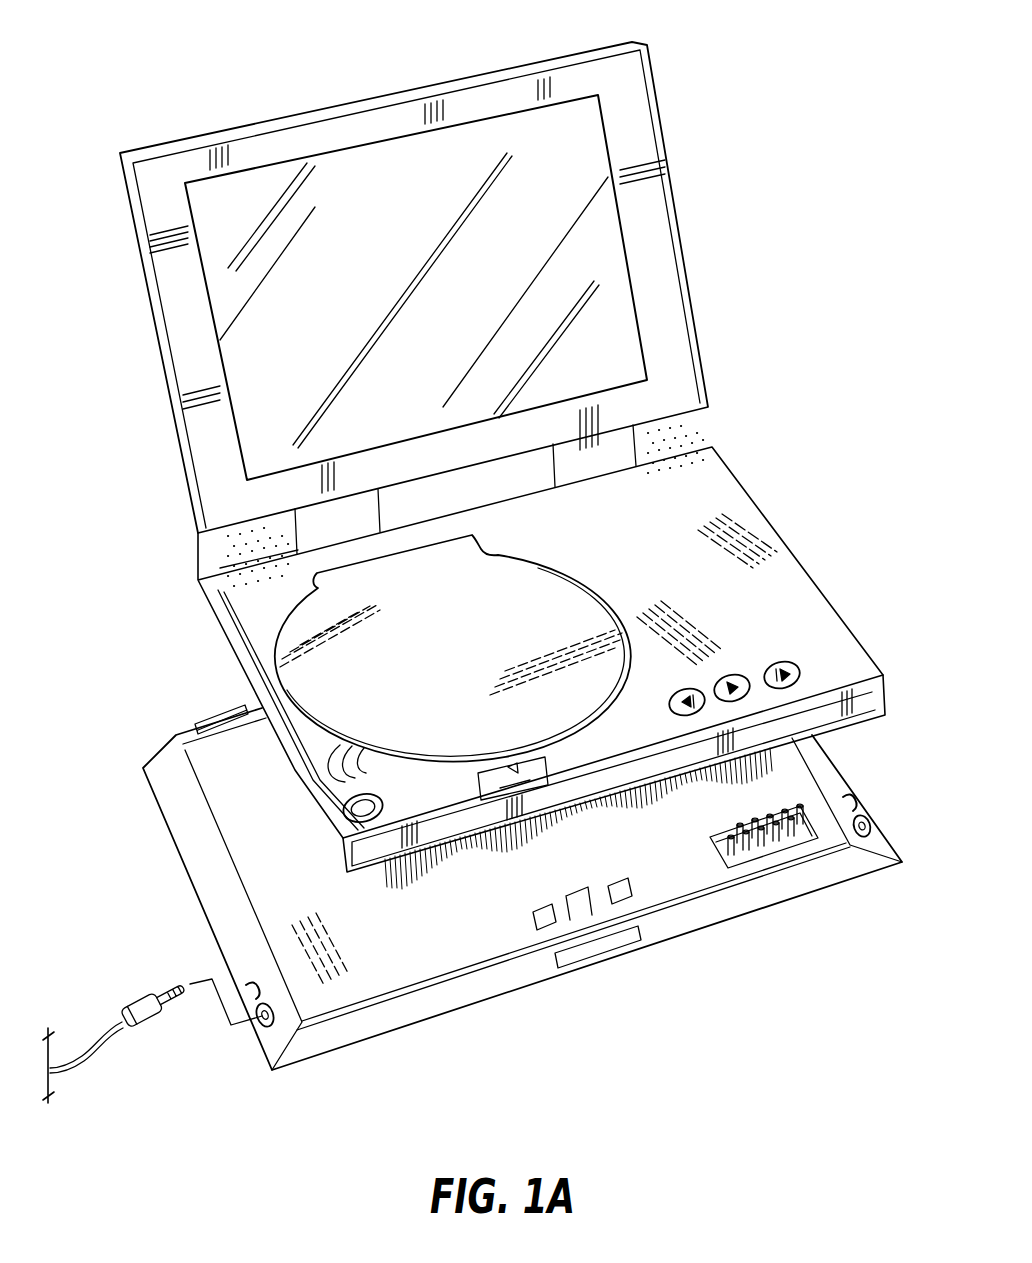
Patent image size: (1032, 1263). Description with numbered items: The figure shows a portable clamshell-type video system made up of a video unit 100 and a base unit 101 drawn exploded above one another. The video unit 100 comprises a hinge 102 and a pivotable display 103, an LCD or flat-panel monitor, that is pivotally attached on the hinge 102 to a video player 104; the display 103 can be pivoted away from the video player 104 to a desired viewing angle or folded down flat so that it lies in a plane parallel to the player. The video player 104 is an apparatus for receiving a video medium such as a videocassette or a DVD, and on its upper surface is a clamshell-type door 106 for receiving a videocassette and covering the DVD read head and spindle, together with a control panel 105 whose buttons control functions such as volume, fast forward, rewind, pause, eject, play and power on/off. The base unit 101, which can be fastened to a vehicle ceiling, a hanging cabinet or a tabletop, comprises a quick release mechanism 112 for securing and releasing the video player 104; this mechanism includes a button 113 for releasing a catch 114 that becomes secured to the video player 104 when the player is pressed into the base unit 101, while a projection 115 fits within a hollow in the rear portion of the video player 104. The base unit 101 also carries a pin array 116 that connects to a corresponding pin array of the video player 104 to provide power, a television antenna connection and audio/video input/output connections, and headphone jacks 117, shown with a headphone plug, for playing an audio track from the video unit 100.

The video unit 100 is at (166, 109).
The base unit 101 is at (162, 752).
The hinge 102 is at (610, 424).
The pivotable display 103 is at (660, 86).
The video player 104 is at (733, 474).
The control panel 105 is at (813, 653).
The clamshell-type door 106 is at (304, 636).
The quick release mechanism 112 is at (675, 943).
The button 113 is at (570, 953).
The catch 114 is at (538, 921).
The projection 115 is at (200, 722).
The pin array 116 is at (778, 847).
The headphone jacks 117 is at (263, 1025).